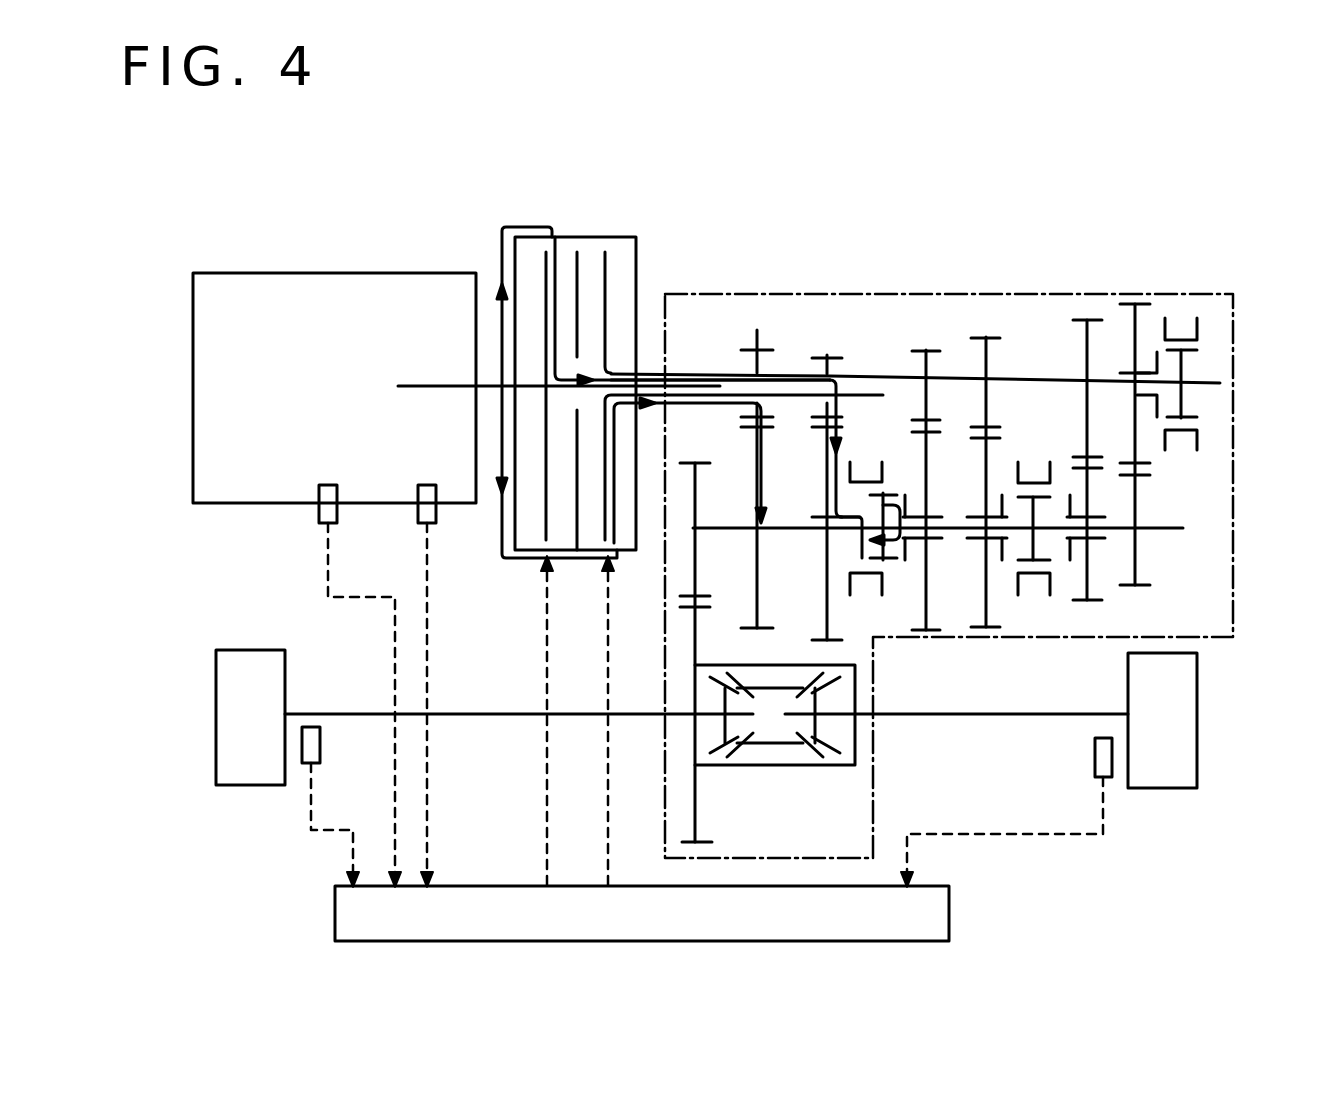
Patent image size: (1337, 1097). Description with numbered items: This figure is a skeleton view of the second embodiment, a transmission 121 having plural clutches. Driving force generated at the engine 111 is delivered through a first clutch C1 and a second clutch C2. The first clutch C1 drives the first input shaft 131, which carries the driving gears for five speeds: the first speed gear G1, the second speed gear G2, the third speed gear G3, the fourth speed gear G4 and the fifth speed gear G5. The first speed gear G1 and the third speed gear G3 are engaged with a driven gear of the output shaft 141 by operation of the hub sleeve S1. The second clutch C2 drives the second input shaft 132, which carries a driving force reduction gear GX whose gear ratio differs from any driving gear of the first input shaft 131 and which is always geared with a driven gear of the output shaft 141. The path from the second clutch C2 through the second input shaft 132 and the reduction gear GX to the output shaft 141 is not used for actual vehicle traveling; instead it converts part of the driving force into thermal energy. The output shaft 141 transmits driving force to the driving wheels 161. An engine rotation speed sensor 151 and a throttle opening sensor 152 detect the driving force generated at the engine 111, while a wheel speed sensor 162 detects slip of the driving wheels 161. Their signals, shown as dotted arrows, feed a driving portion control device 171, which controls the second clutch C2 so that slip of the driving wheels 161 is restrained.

The engine 111 is at (332, 283).
The first clutch C1 is at (565, 250).
The second clutch C2 is at (617, 250).
The transmission 121 is at (695, 293).
The first input shaft 131 is at (1208, 382).
The second input shaft 132 is at (783, 372).
The driving force reduction gear GX is at (758, 330).
The first speed gear G1 is at (832, 358).
The second speed gear G2 is at (931, 350).
The third speed gear G3 is at (988, 337).
The fourth speed gear G4 is at (1093, 320).
The fifth speed gear G5 is at (1142, 304).
The hub sleeve S1 is at (870, 502).
The output shaft 141 is at (1177, 527).
The engine rotation speed sensor 151 is at (325, 514).
The throttle opening sensor 152 is at (417, 514).
The driving wheels 161 is at (240, 660).
The wheel speed sensor 162 is at (306, 762).
The driving portion control device 171 is at (928, 917).